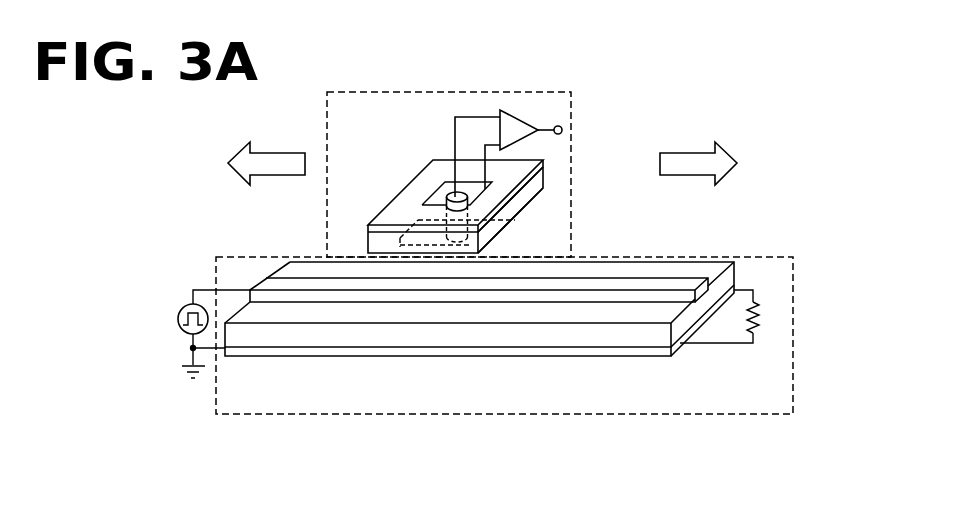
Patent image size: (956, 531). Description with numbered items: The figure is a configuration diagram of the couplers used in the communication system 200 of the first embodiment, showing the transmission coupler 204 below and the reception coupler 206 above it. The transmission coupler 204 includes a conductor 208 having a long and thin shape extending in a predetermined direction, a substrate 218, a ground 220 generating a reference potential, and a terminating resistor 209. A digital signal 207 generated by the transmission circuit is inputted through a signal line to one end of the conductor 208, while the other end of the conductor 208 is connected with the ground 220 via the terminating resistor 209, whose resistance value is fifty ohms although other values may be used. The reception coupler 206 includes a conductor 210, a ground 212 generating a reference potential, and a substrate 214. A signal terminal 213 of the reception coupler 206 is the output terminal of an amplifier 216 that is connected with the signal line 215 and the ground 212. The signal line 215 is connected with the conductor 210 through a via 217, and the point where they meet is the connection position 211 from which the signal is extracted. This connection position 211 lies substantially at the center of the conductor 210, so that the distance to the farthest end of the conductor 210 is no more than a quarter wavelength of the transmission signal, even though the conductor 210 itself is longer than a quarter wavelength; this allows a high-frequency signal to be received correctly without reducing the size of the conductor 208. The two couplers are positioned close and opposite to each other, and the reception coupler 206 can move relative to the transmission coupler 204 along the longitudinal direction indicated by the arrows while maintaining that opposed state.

The communication system 200 is at (717, 53).
The transmission coupler 204 is at (430, 415).
The reception coupler 206 is at (397, 92).
The digital signal 207 is at (178, 316).
The conductor 208 is at (364, 293).
The terminating resistor 209 is at (760, 318).
The conductor 210 is at (507, 232).
The connection position 211 is at (460, 241).
The ground 212 is at (543, 163).
The signal terminal 213 is at (562, 130).
The substrate 214 is at (530, 196).
The signal line 215 is at (455, 130).
The amplifier 216 is at (520, 109).
The via 217 is at (443, 216).
The substrate 218 is at (557, 332).
The ground 220 is at (625, 357).